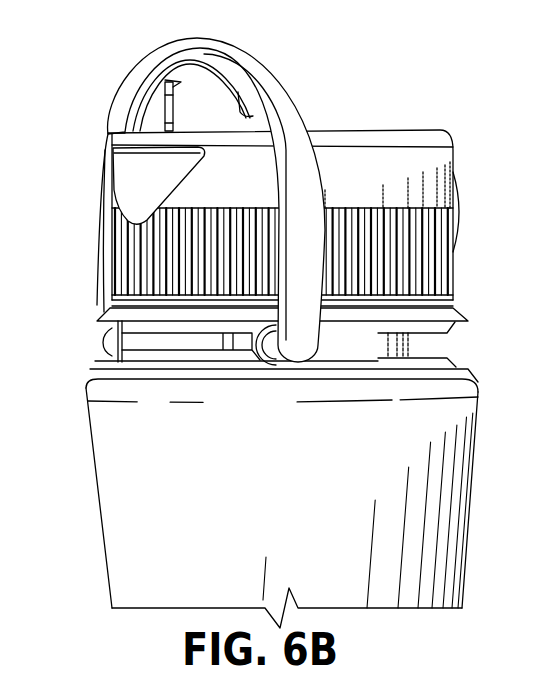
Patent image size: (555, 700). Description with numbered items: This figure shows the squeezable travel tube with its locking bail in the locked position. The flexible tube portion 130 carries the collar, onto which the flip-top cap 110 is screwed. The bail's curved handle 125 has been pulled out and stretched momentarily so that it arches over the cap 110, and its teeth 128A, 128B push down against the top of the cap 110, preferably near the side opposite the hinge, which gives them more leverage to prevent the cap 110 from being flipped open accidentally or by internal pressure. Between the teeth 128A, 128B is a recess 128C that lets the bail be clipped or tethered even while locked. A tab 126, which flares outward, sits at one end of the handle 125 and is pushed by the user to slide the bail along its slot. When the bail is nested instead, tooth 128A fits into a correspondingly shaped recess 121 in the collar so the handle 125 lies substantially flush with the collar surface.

The cap 110 is at (133, 137).
The recess 121 is at (137, 340).
The handle 125 is at (277, 91).
The tab 126 is at (303, 338).
The tooth 128A is at (154, 118).
The tooth 128B is at (250, 73).
The recess 128C is at (209, 87).
The tube portion 130 is at (122, 494).